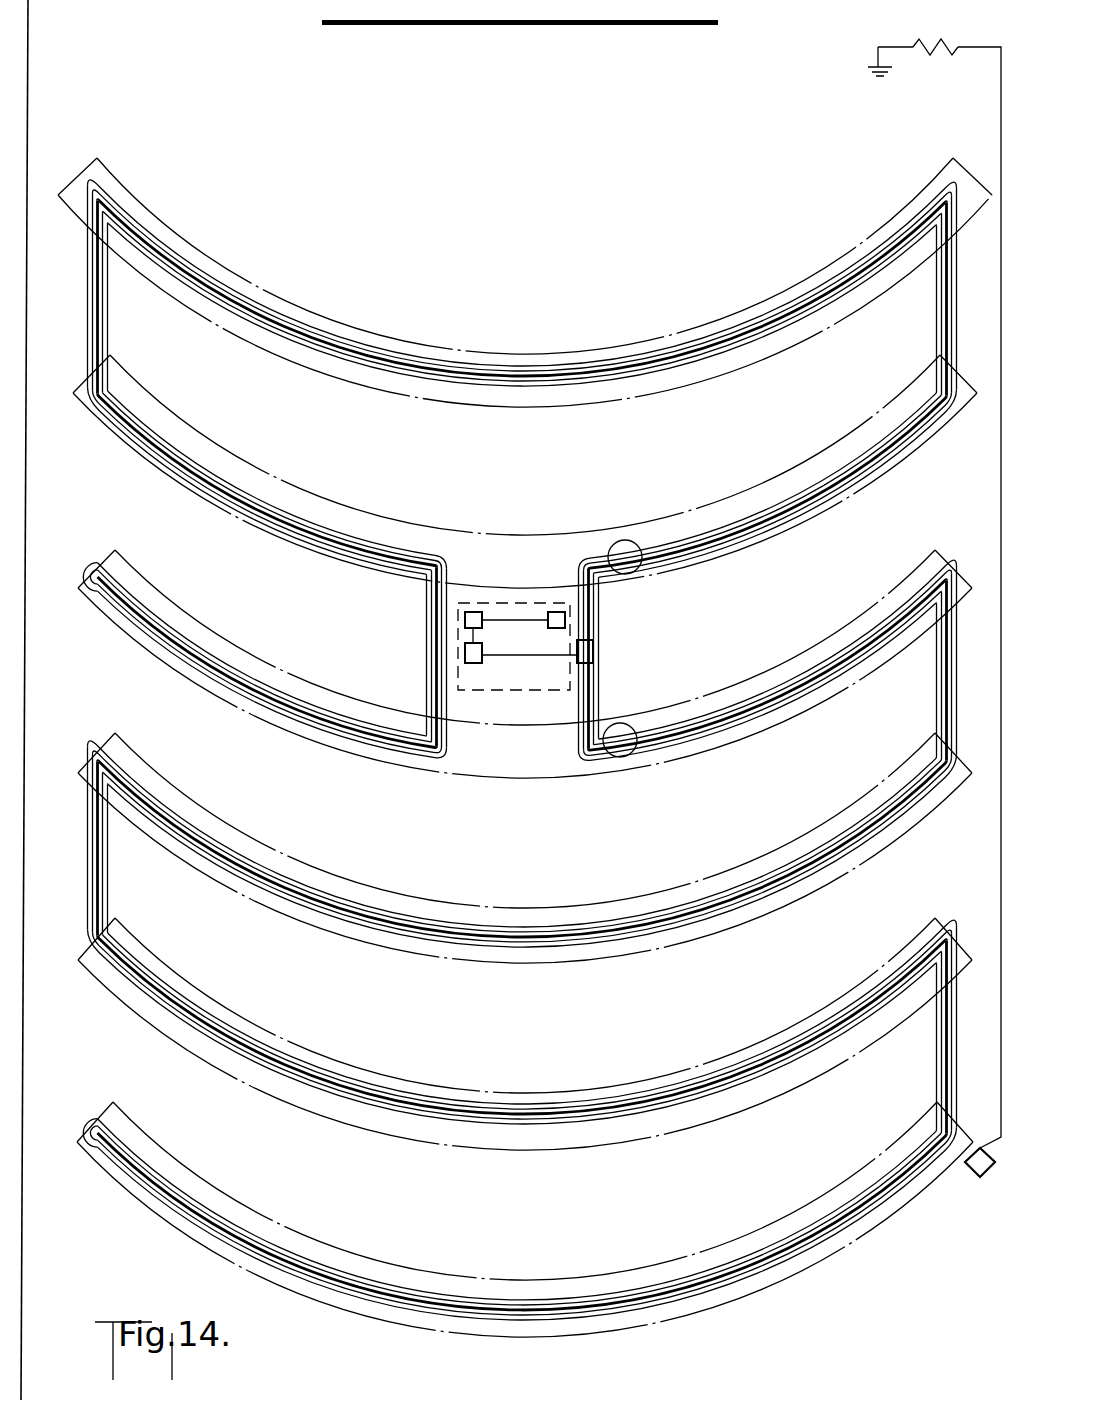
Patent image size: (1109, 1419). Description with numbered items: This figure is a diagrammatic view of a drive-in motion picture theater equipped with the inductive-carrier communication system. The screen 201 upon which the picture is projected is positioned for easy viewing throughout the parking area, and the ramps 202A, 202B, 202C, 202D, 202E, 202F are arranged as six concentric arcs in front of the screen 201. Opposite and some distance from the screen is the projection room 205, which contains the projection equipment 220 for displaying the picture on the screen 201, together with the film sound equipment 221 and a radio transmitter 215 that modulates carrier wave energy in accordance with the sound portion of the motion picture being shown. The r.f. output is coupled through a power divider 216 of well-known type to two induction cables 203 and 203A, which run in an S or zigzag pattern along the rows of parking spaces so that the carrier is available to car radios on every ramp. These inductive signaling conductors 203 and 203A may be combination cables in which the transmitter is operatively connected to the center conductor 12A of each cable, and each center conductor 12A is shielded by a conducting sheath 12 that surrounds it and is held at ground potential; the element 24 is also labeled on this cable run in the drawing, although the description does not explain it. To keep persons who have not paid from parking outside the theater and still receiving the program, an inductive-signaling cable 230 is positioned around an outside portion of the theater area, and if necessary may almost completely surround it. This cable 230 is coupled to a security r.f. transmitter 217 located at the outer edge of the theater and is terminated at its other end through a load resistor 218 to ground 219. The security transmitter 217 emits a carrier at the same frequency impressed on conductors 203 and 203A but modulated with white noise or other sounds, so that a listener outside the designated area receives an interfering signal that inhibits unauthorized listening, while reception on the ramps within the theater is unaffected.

The conducting sheath 12 is at (935, 339).
The center conductor 12A is at (940, 318).
The electrical heating circuit 24 is at (519, 750).
The screen 201 is at (607, 26).
The ramp 202A is at (716, 324).
The ramp 202B is at (713, 506).
The ramp 202C is at (695, 714).
The ramp 202D is at (694, 882).
The ramp 202E is at (695, 1058).
The ramp 202F is at (707, 1252).
The induction cable 203 is at (618, 541).
The induction cable 203A is at (617, 763).
The projection room 205 is at (563, 636).
The radio transmitter 215 is at (483, 664).
The power divider 216 is at (595, 645).
The r.f. transmitter 217 is at (977, 1178).
The load resistor 218 is at (928, 58).
The ground 219 is at (876, 62).
The projection equipment 220 is at (556, 612).
The film sound equipment 221 is at (473, 611).
The inductive-signaling cable 230 is at (1000, 858).